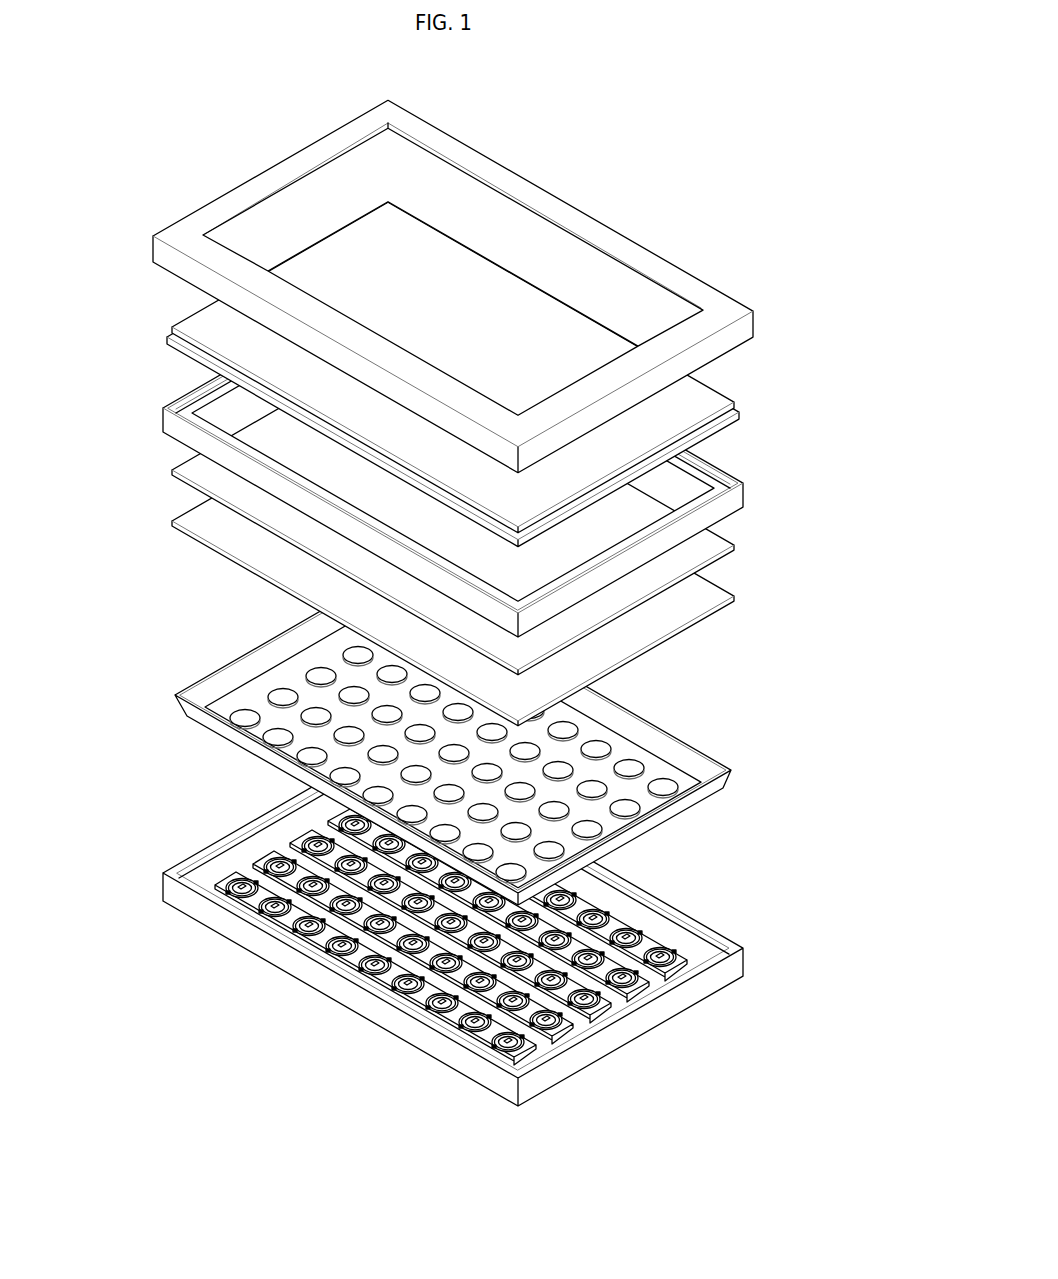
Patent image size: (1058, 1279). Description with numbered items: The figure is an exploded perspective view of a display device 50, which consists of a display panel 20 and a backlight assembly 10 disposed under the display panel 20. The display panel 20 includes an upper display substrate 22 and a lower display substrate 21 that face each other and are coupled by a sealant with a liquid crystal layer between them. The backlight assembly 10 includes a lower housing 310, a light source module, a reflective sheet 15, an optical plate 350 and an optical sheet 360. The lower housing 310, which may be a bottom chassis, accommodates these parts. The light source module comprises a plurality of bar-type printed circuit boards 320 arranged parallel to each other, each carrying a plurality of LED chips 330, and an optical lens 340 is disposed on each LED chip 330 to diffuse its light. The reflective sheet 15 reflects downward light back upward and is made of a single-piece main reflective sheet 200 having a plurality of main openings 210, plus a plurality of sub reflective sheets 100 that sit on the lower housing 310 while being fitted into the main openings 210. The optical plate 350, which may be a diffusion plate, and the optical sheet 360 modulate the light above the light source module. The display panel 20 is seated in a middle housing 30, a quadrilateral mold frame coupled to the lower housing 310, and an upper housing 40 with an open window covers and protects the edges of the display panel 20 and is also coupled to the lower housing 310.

The backlight assembly 10 is at (441, 741).
The reflective sheet 15 is at (391, 854).
The display panel 20 is at (499, 374).
The lower display substrate 21 is at (741, 417).
The upper display substrate 22 is at (736, 404).
The middle housing 30 is at (745, 497).
The upper housing 40 is at (754, 324).
The display device 50 is at (589, 107).
The sub reflective sheet 100 is at (412, 964).
The main reflective sheet 200 is at (407, 738).
The main opening 210 is at (292, 697).
The lower housing 310 is at (672, 1006).
The printed circuit board 320 is at (530, 1062).
The LED chip 330 is at (469, 1085).
The optical lens 340 is at (495, 1049).
The optical plate 350 is at (724, 601).
The optical sheet 360 is at (487, 510).